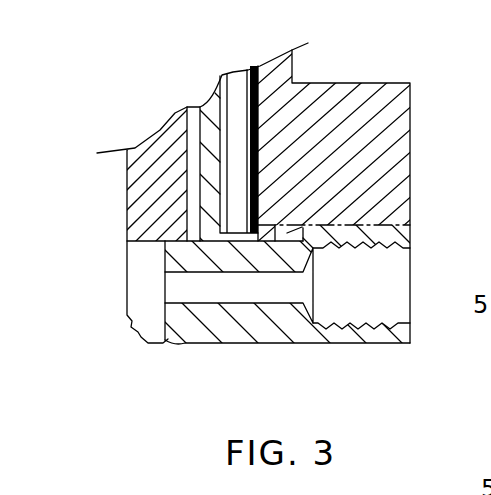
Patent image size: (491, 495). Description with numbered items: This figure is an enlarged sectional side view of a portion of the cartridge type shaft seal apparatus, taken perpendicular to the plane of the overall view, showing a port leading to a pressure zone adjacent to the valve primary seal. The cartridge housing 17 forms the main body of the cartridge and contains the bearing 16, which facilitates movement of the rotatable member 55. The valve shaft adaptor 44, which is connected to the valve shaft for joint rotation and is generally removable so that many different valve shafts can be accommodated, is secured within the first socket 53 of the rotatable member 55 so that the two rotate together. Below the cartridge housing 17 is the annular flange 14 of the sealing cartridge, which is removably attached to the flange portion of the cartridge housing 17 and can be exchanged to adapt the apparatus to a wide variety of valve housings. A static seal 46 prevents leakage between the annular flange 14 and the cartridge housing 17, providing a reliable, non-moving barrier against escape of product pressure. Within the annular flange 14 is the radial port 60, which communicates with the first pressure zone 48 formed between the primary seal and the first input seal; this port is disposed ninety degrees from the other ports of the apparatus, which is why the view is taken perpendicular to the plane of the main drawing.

The annular flange 14 is at (253, 327).
The bearing 16 is at (257, 130).
The cartridge housing 17 is at (340, 152).
The valve shaft adaptor 44 is at (152, 178).
The static seal 46 is at (337, 213).
The first pressure zone 48 is at (143, 275).
The first socket 53 is at (186, 205).
The rotatable member 55 is at (203, 100).
The radial port 60 is at (373, 304).